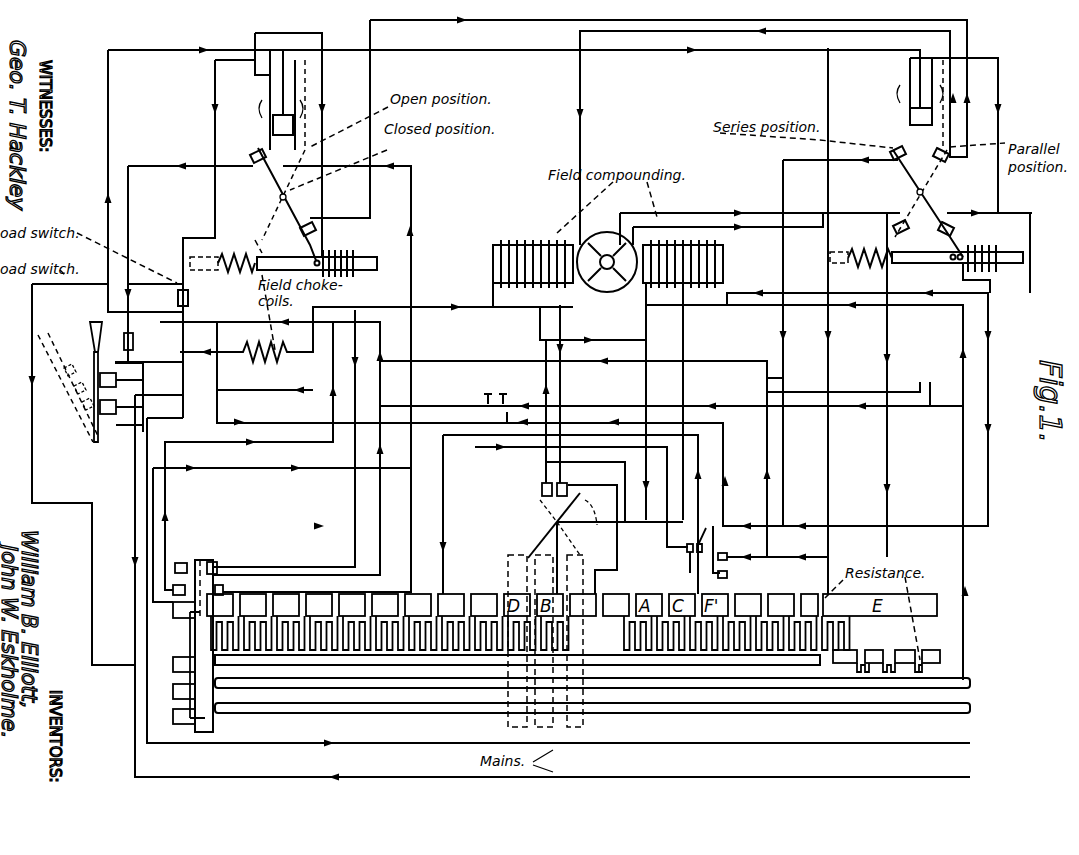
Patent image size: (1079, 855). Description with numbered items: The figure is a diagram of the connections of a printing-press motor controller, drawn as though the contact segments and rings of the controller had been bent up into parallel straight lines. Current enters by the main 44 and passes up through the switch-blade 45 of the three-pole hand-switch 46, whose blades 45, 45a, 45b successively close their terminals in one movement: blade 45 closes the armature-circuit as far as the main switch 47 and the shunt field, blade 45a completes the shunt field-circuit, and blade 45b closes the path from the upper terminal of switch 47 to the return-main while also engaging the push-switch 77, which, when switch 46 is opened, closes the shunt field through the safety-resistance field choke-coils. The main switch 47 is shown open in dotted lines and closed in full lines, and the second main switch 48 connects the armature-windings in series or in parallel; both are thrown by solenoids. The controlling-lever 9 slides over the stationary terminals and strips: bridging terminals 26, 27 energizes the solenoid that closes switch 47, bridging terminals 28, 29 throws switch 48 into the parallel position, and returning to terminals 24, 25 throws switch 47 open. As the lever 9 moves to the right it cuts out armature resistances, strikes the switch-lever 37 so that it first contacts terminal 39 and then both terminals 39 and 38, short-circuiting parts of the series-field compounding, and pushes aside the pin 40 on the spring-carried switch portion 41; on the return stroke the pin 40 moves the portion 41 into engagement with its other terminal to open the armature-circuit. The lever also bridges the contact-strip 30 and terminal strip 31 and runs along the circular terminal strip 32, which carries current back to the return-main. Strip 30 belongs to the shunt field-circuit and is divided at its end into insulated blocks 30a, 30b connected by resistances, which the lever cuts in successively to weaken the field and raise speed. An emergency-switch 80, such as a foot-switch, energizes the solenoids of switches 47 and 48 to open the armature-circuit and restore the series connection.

The controlling-lever 9 is at (213, 702).
The terminal 24 is at (173, 590).
The terminal 25 is at (184, 564).
The solenoid-terminal 26 is at (217, 566).
The solenoid-terminal 27 is at (223, 589).
The terminal 28 is at (727, 577).
The terminal 29 is at (736, 547).
The contact-strip 30 is at (548, 669).
The contact-block 30a is at (852, 650).
The contact-block 30b is at (885, 650).
The terminal strip 31 is at (659, 688).
The circular terminal strip 32 is at (632, 713).
The switch-lever 37 is at (552, 525).
The contact-point 38 is at (542, 490).
The contact-point 39 is at (568, 486).
The pin 40 is at (687, 550).
The switch portion 41 is at (698, 530).
The main 44 is at (420, 778).
The switch-blade 45 is at (119, 418).
The switch-blade 45a is at (115, 408).
The switch-blade 45b is at (116, 382).
The three-pole switch 46 is at (93, 352).
The main switch 47 is at (262, 190).
The main switch 48 is at (976, 213).
The push-switch 77 is at (135, 345).
The emergency-switch 80 is at (443, 397).